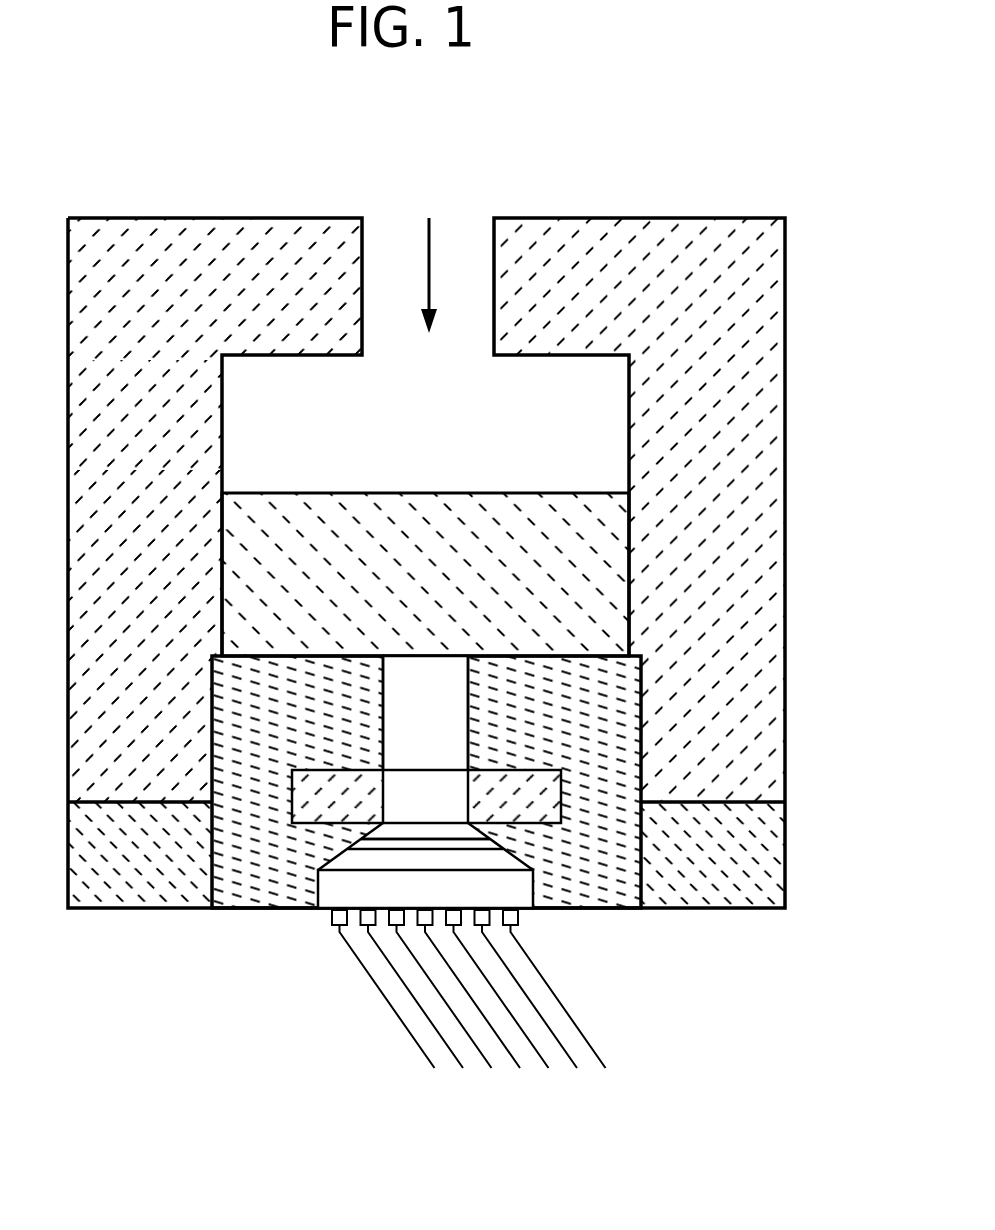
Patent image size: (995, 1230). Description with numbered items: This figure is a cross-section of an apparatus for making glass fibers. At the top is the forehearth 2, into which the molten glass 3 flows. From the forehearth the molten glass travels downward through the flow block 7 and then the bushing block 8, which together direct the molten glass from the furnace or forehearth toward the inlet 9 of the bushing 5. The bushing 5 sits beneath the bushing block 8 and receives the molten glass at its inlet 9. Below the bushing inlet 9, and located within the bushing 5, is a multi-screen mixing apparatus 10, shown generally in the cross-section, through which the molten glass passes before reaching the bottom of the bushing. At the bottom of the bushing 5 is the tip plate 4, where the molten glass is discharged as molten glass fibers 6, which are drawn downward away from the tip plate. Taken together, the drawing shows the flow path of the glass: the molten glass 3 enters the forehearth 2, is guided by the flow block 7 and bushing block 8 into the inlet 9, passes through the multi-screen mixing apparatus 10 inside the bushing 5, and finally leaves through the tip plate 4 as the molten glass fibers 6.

The forehearth 2 is at (637, 218).
The molten glass 3 is at (563, 507).
The tip plate 4 is at (517, 897).
The bushing 5 is at (507, 857).
The molten glass fibers 6 is at (587, 1040).
The flow block 7 is at (620, 683).
The bushing block 8 is at (547, 803).
The inlet 9 is at (428, 823).
The multi-screen mixing apparatus 10 is at (418, 847).